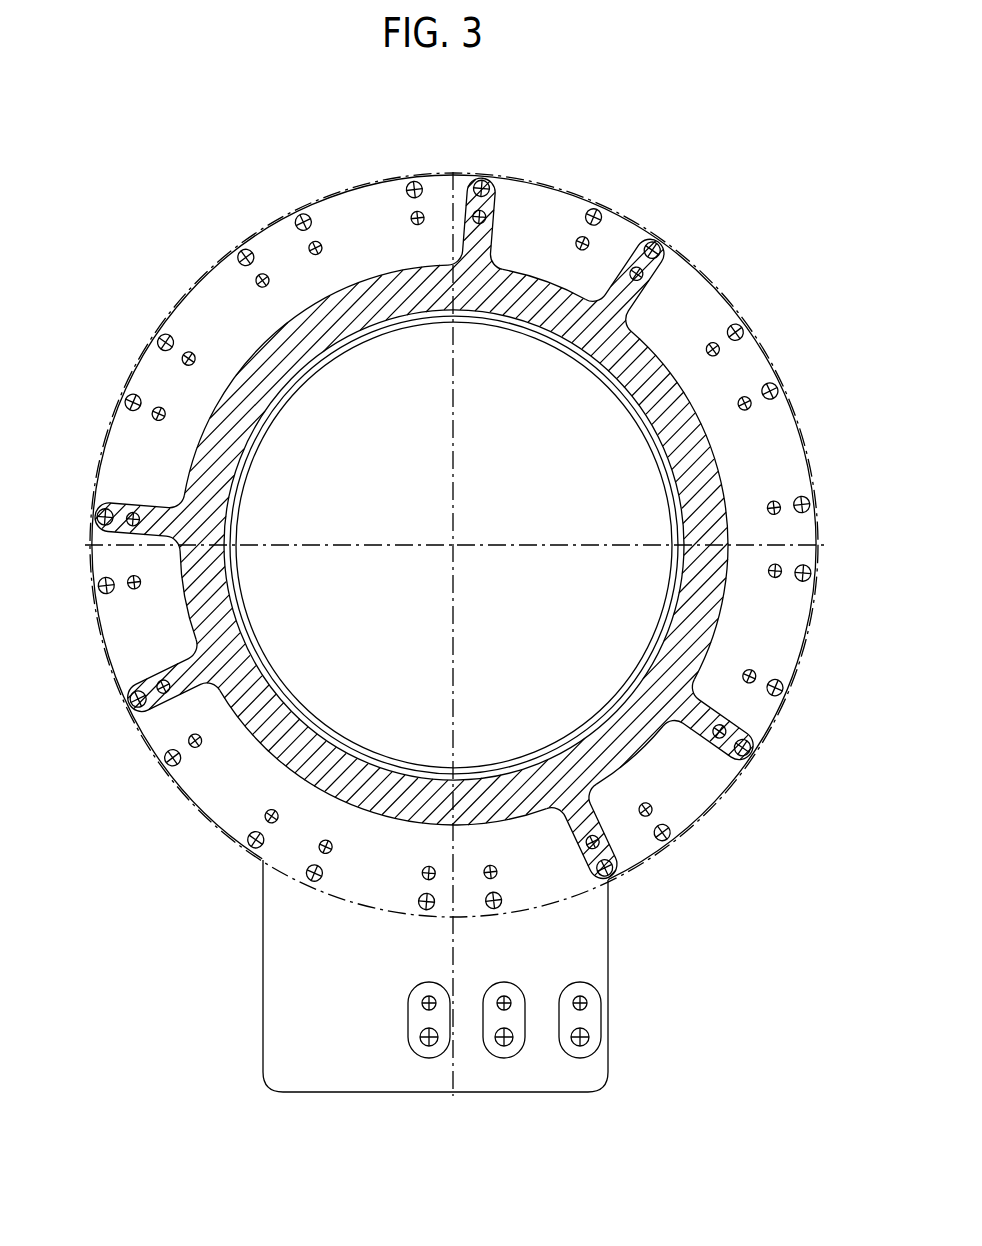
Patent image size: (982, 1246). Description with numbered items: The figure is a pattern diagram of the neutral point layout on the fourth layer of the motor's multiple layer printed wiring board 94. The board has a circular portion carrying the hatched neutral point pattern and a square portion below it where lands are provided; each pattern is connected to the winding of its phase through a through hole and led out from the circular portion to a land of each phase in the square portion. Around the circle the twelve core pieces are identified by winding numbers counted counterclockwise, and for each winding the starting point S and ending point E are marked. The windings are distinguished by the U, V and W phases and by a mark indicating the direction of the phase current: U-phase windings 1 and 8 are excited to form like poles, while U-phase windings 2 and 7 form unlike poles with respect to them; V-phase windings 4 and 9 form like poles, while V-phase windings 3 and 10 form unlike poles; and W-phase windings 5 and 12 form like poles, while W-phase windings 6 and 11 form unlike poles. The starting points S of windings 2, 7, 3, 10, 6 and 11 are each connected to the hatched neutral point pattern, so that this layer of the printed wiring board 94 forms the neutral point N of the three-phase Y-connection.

The winding number 1 (U-phase winding U1F) 1 is at (796, 440).
The winding number 2 (U-phase winding U2R) 2 is at (700, 287).
The winding number 3 (V-phase winding V3R) 3 is at (545, 194).
The winding number 4 (V-phase winding V4F) 4 is at (357, 195).
The winding number 5 (W-phase winding W5F) 5 is at (200, 296).
The winding number 6 (W-phase winding W6R) 6 is at (106, 460).
The winding number 7 (U-phase winding U7R) 7 is at (111, 652).
The winding number 8 (U-phase winding U8F) 8 is at (210, 804).
The winding number 9 (V-phase winding V9F) 9 is at (367, 891).
The winding number 10 (V-phase winding V10R) 10 is at (559, 889).
The winding number 11 (W-phase winding W11R) 11 is at (715, 795).
The winding number 12 (W-phase winding W12F) 12 is at (807, 637).
The multiple layer printed wiring board (fourth layer) 94 is at (608, 1075).